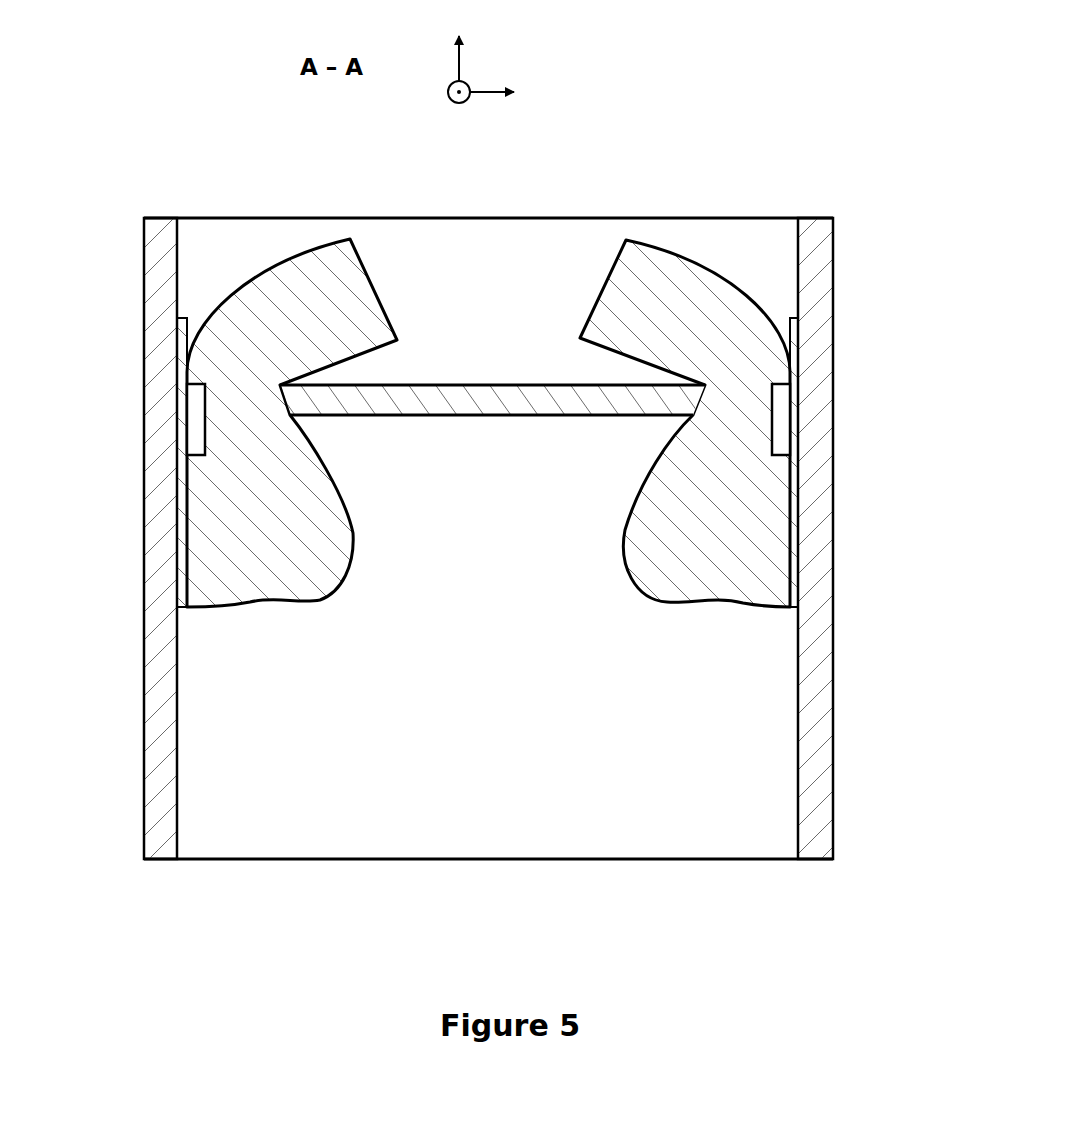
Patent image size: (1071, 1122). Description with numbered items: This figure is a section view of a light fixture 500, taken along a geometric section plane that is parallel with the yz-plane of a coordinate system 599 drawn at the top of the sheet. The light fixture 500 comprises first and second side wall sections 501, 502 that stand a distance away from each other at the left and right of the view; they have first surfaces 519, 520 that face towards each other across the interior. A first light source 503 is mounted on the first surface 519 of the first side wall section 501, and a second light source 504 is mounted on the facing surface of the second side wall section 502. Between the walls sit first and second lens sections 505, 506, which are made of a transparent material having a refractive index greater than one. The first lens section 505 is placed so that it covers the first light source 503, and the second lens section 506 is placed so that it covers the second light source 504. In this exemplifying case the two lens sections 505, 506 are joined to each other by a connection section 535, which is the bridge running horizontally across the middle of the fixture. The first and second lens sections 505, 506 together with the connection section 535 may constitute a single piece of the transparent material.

The light fixture 500 is at (231, 100).
The first side wall section 501 is at (157, 216).
The second side wall section 502 is at (834, 293).
The first light source 503 is at (192, 418).
The second light source 504 is at (792, 408).
The first lens section 505 is at (354, 533).
The second lens section 506 is at (622, 547).
The first surface 519 is at (186, 790).
The first surface 520 is at (790, 802).
The connection section 535 is at (460, 384).
The coordinate system 599 is at (518, 67).